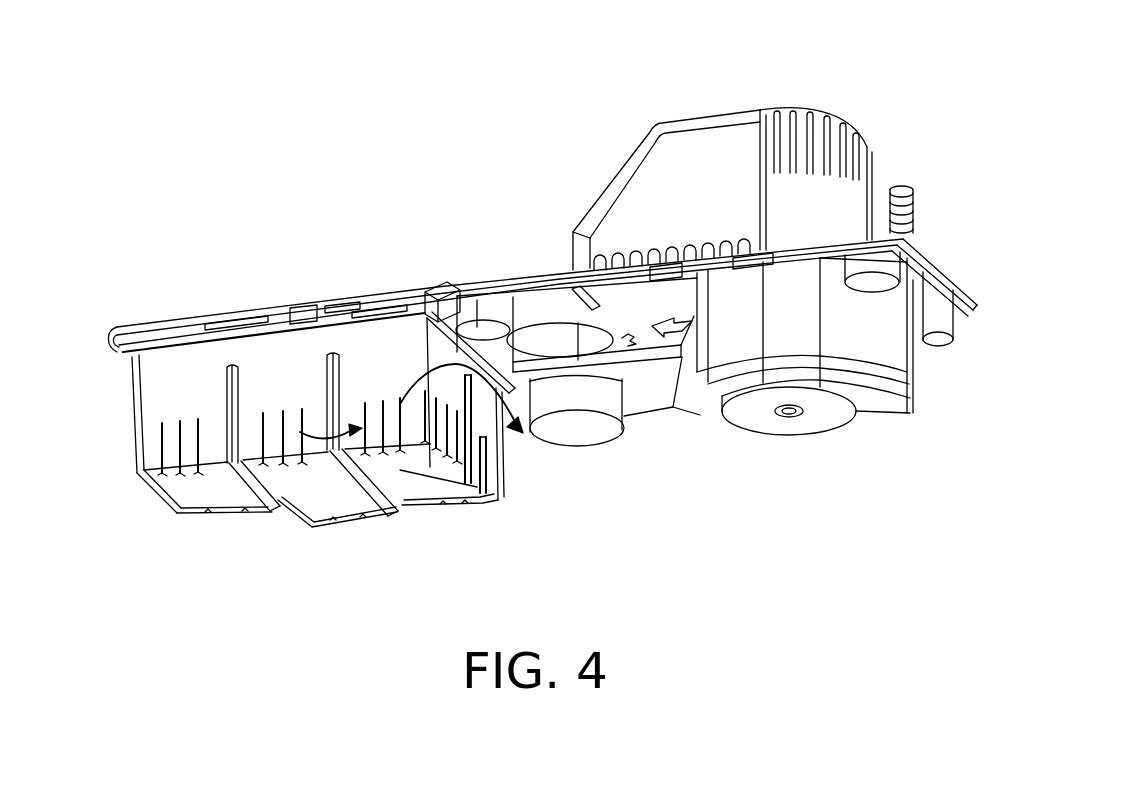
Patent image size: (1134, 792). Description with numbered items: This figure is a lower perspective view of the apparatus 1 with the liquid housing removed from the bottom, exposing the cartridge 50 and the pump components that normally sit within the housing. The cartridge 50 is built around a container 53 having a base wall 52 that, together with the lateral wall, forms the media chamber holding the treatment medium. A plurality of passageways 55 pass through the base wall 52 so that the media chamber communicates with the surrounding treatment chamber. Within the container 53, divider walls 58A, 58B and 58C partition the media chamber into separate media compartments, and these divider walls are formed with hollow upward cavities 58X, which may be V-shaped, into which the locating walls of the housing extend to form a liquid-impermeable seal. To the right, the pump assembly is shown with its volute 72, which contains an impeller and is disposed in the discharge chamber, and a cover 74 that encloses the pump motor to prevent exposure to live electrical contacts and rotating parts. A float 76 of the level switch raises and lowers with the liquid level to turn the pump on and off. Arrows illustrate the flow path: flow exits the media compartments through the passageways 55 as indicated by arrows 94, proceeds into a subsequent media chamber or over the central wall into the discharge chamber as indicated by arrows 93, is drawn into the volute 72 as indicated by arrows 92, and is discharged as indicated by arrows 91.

The apparatus 1 is at (362, 165).
The cartridge 50 is at (124, 423).
The base wall 52 is at (377, 462).
The container 53 is at (508, 490).
The passageways 55 is at (285, 437).
The divider wall 58A is at (235, 413).
The divider wall 58B is at (333, 398).
The hollow upward cavities 58X is at (280, 506).
The divider wall 58C is at (387, 497).
The volute 72 is at (823, 418).
The cover 74 is at (708, 113).
The float 76 is at (577, 434).
The arrows 91 is at (900, 228).
The arrows 92 is at (772, 419).
The arrows 93 is at (467, 416).
The arrows 94 is at (313, 430).